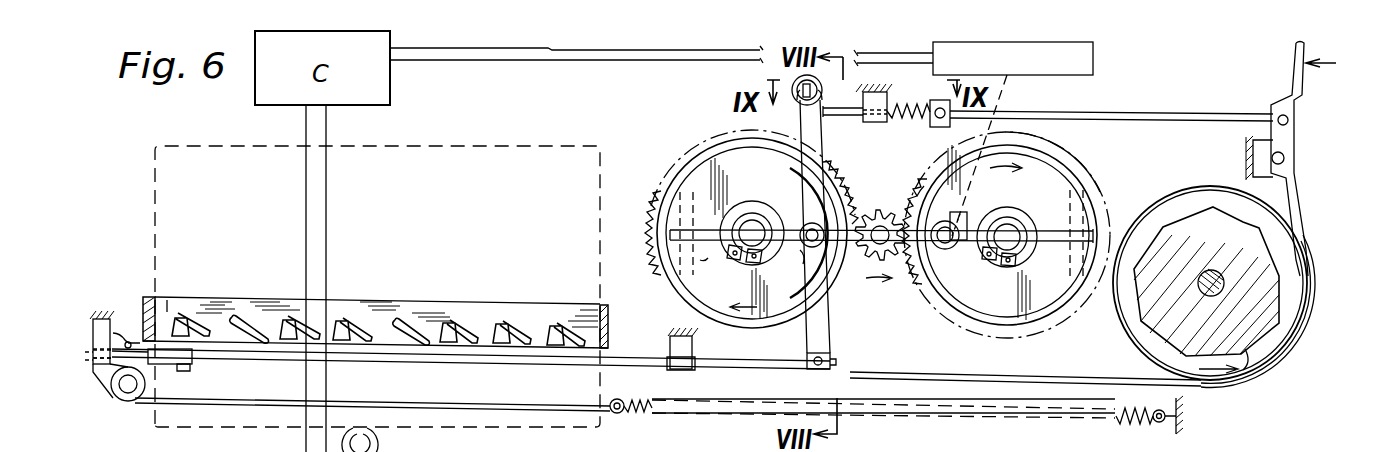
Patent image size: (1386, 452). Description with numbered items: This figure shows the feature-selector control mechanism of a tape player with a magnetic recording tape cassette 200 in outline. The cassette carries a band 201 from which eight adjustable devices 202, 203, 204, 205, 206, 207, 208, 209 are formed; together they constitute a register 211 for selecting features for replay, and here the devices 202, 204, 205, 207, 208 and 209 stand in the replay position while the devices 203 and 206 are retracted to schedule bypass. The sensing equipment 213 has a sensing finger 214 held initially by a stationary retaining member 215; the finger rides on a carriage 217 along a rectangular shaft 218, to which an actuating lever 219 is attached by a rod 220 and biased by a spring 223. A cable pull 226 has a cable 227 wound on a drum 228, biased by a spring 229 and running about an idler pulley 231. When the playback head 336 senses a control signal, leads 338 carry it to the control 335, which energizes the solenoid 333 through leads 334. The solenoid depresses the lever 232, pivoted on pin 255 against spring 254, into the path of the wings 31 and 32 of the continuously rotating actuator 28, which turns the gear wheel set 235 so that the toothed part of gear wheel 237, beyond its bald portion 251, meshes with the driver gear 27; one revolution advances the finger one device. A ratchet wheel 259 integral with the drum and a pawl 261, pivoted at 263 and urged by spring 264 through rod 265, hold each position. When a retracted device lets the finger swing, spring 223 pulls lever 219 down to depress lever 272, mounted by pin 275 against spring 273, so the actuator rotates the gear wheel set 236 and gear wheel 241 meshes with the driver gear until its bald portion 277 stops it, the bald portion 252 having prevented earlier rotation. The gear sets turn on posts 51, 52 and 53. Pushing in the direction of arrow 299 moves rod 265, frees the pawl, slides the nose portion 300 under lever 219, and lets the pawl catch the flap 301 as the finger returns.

The control 335 is at (392, 36).
The leads 334 is at (552, 52).
The leads 338 is at (310, 200).
The magnetic recording tape cassette 200 is at (144, 226).
The band 201 is at (600, 300).
The device 202 is at (184, 314).
The device 203 is at (252, 317).
The device 204 is at (296, 318).
The device 205 is at (350, 320).
The device 206 is at (410, 324).
The device 207 is at (468, 292).
The device 208 is at (525, 302).
The device 209 is at (565, 326).
The register 211 is at (171, 300).
The sensing equipment 213 is at (261, 376).
The sensing finger 214 is at (112, 320).
The stationary retaining member 215 is at (134, 332).
The carriage 217 is at (106, 383).
The shaft 218 is at (385, 357).
The cable pull 226 is at (186, 418).
The spring 229 is at (642, 414).
The idler pulley 231 is at (123, 401).
The playback head 336 is at (380, 444).
The rod 220 is at (755, 358).
The spring 223 is at (798, 84).
The gear wheel set 236 is at (700, 168).
The pin 275 is at (665, 186).
The gear wheel 241 is at (660, 232).
The bald portion 277 is at (662, 268).
The bald portion 252 is at (684, 324).
The actuating lever 219 is at (810, 184).
The lever 272 is at (812, 222).
The post 52 is at (737, 262).
The spring 273 is at (806, 248).
The driver gear 27 is at (865, 294).
The actuator wing 32 is at (855, 200).
The rotary actuator 28 is at (886, 202).
The nose portion 300 is at (828, 118).
The spring 264 is at (934, 93).
The solenoid 333 is at (1093, 60).
The bald portion 251 is at (917, 188).
The lever 232 is at (960, 212).
The pin 255 is at (1084, 163).
The gear wheel set 235 is at (1106, 179).
The rod 265 is at (1194, 114).
The arrow 299 is at (1308, 72).
The pivot 263 is at (1285, 156).
The pawl 261 is at (1296, 200).
The flap 301 is at (1305, 245).
The post 53 is at (1200, 280).
The cable drum 228 is at (1306, 298).
The ratchet wheel 259 is at (1246, 350).
The actuator wing 31 is at (940, 248).
The spring 254 is at (991, 260).
The post 51 is at (1030, 255).
The gear wheel 237 is at (915, 290).
The cable 227 is at (1082, 378).